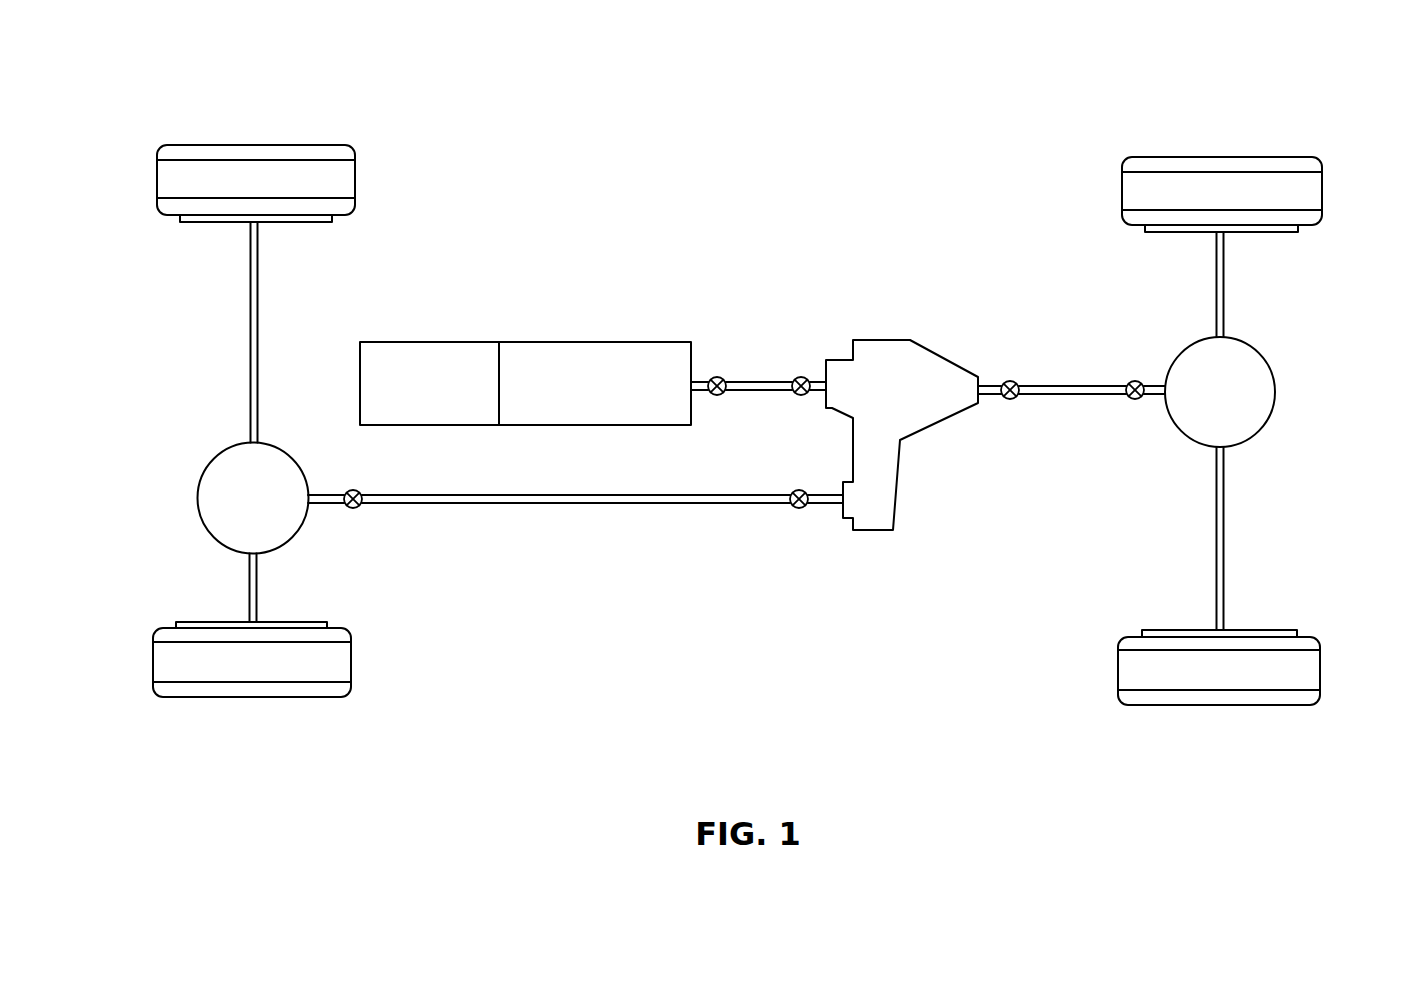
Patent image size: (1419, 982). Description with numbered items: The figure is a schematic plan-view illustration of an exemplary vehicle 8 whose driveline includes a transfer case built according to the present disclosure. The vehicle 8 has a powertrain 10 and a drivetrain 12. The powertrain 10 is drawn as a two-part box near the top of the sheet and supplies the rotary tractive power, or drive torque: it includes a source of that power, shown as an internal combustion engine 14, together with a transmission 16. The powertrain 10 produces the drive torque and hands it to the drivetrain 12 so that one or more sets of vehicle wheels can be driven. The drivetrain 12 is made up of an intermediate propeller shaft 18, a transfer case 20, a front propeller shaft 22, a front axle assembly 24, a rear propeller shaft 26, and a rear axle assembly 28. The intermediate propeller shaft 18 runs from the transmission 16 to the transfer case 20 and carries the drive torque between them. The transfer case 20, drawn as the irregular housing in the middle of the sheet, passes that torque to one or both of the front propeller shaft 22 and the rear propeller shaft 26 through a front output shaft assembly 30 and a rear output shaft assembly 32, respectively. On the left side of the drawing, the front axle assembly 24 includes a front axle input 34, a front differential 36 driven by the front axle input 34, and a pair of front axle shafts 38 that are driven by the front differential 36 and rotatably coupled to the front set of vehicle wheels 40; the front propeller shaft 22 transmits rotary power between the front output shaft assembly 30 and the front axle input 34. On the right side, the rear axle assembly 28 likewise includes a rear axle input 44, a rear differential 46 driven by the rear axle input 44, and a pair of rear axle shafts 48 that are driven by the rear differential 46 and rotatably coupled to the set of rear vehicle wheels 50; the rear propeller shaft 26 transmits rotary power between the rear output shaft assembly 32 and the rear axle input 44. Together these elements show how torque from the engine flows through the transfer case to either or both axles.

The vehicle 8 is at (635, 570).
The powertrain 10 is at (549, 297).
The drivetrain 12 is at (876, 324).
The internal combustion engine 14 is at (421, 357).
The transmission 16 is at (592, 358).
The intermediate propeller shaft 18 is at (745, 383).
The transfer case 20 is at (930, 362).
The front propeller shaft 22 is at (555, 499).
The front axle assembly 24 is at (255, 412).
The rear propeller shaft 26 is at (1060, 395).
The rear axle assembly 28 is at (1222, 322).
The front output shaft assembly 30 is at (825, 503).
The rear output shaft assembly 32 is at (1000, 374).
The front axle input 34 is at (323, 498).
The front differential 36 is at (213, 498).
The front axle shafts 38 is at (257, 296).
The front vehicle wheels 40 is at (317, 172).
The rear axle input 44 is at (1152, 395).
The rear differential 46 is at (1265, 392).
The rear axle shafts 48 is at (1222, 253).
The rear vehicle wheels 50 is at (1252, 167).